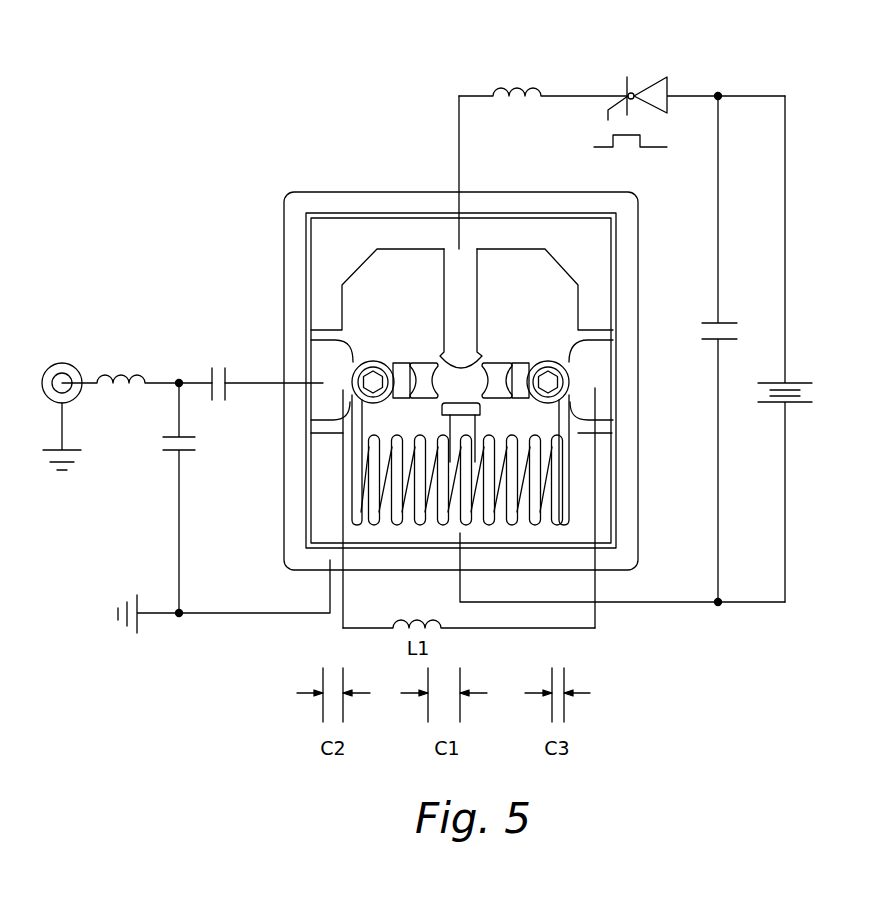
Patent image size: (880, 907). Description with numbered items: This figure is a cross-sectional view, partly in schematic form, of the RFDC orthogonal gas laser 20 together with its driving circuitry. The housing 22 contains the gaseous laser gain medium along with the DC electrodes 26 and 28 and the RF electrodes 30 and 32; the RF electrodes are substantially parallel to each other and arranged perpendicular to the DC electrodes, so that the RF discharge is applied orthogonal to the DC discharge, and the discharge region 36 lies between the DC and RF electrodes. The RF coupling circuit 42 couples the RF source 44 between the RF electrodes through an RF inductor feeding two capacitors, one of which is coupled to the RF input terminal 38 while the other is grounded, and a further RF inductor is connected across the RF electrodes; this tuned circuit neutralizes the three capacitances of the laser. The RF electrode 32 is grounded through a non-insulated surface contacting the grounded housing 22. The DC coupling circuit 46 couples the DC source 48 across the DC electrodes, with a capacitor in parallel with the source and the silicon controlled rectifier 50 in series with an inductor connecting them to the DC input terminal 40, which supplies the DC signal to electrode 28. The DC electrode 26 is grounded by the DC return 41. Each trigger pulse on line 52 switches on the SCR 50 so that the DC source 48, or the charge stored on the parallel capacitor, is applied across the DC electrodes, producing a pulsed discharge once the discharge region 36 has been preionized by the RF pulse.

The gas laser 20 is at (472, 73).
The housing 22 is at (630, 405).
The DC electrode 26 is at (470, 427).
The DC electrode 28 is at (465, 288).
The RF electrode 30 is at (421, 380).
The RF electrode 32 is at (562, 473).
The discharge region 36 is at (460, 383).
The RF input terminal 38 is at (330, 357).
The DC input terminal 40 is at (459, 160).
The DC return 41 is at (460, 583).
The RF coupling circuit 42 is at (155, 318).
The RF source 44 is at (62, 363).
The DC coupling circuit 46 is at (716, 73).
The DC source 48 is at (786, 380).
The silicon controlled rectifier 50 is at (636, 86).
The trigger pulse line 52 is at (608, 108).